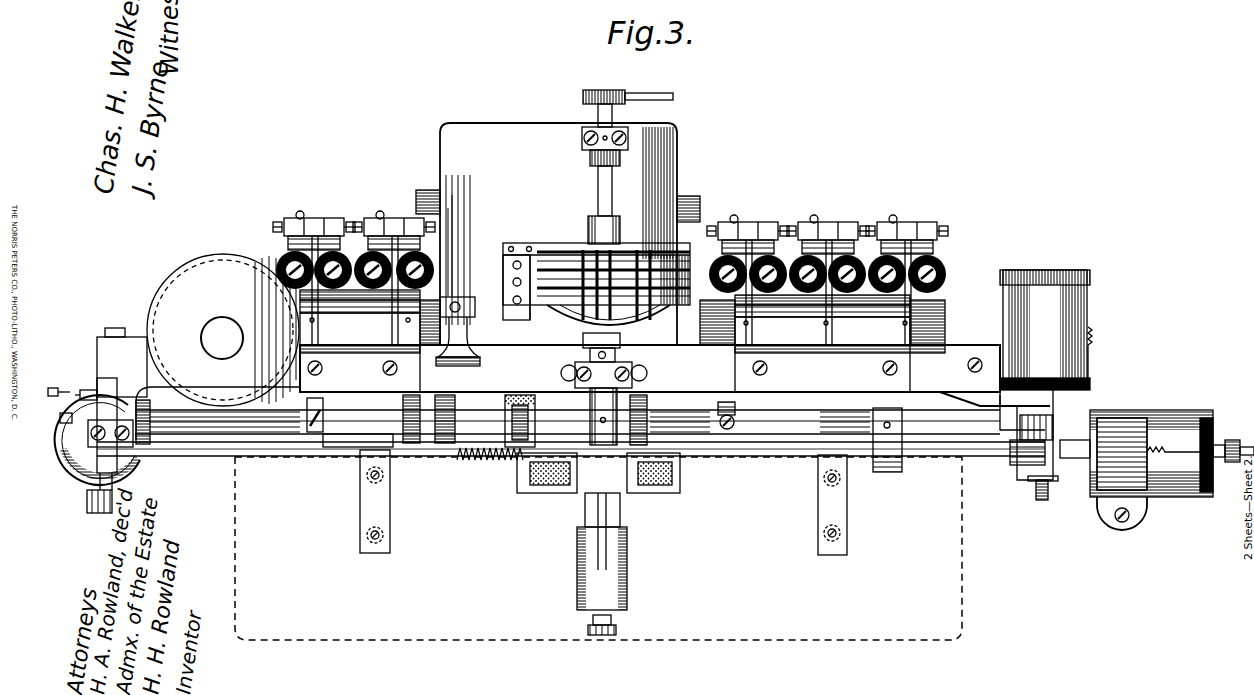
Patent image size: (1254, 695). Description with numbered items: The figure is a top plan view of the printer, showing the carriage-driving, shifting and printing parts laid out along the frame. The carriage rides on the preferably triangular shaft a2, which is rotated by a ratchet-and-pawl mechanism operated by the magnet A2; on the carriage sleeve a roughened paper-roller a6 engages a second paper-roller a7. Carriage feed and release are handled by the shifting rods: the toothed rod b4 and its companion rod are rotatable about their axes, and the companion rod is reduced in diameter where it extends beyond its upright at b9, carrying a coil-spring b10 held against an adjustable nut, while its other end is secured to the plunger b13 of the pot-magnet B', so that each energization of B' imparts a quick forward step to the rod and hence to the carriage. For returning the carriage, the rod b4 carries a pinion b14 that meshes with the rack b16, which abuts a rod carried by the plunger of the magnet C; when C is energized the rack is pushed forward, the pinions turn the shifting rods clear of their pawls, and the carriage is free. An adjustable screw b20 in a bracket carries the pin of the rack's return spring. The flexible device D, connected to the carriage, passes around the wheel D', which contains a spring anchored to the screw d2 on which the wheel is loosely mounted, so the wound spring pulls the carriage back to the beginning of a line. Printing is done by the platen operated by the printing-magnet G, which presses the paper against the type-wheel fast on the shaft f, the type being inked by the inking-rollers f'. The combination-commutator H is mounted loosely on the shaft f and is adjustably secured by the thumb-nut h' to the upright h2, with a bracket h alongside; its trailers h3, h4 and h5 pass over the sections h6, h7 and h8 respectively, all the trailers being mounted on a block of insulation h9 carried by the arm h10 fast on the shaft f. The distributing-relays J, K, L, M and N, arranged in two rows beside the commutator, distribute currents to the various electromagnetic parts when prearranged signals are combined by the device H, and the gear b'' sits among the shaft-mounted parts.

The wheel D' is at (223, 330).
The screw d2 is at (222, 338).
The distributing-relay J is at (314, 268).
The distributing-relay K is at (394, 268).
The distributing-relay L is at (748, 269).
The distributing-relay M is at (828, 269).
The distributing-relay N is at (907, 269).
The combination-commutator H is at (558, 234).
The bracket h is at (466, 301).
The thumb-nut h' is at (472, 345).
The upright h2 is at (452, 298).
The trailer h3 is at (553, 268).
The trailer h4 is at (561, 283).
The trailer h5 is at (552, 302).
The commutator section h6 is at (658, 250).
The commutator section h7 is at (667, 294).
The commutator section h8 is at (647, 302).
The block of insulation h9 is at (537, 222).
The arm h10 is at (628, 238).
The shaft f is at (616, 167).
The inking-rollers f' is at (608, 488).
The shaft a2 is at (567, 425).
The roughened paper-roller a6 is at (520, 397).
The paper-roller a7 is at (509, 458).
The gear b'' is at (420, 443).
The reduced extension of rod b9 is at (478, 462).
The coil-spring b10 is at (458, 463).
The shifting rod b4 is at (937, 458).
The plunger b13 is at (1083, 458).
The pinion b14 is at (1020, 468).
The rack b16 is at (1018, 404).
The adjustable screw b20 is at (1038, 498).
The magnet B' is at (1172, 472).
The magnet C is at (1045, 330).
The printing-magnet G is at (628, 566).
The flexible device D is at (295, 442).
The magnet A2 is at (137, 480).